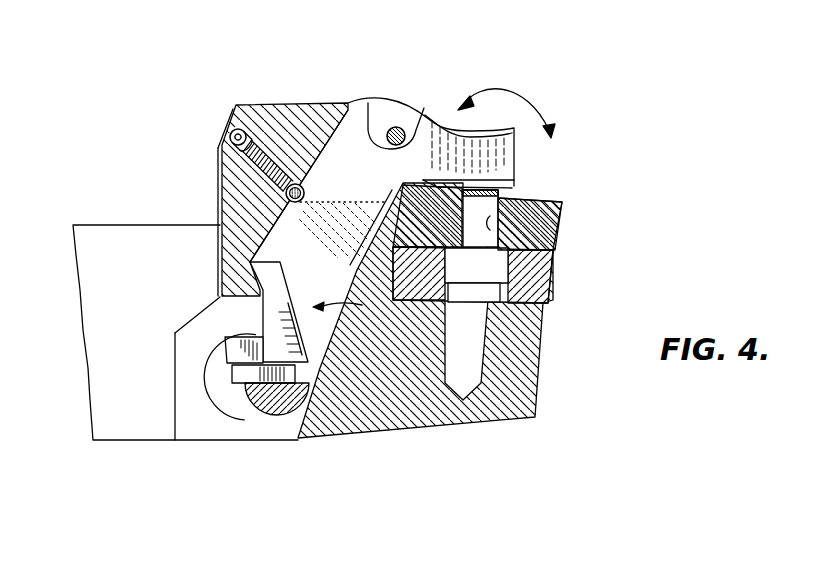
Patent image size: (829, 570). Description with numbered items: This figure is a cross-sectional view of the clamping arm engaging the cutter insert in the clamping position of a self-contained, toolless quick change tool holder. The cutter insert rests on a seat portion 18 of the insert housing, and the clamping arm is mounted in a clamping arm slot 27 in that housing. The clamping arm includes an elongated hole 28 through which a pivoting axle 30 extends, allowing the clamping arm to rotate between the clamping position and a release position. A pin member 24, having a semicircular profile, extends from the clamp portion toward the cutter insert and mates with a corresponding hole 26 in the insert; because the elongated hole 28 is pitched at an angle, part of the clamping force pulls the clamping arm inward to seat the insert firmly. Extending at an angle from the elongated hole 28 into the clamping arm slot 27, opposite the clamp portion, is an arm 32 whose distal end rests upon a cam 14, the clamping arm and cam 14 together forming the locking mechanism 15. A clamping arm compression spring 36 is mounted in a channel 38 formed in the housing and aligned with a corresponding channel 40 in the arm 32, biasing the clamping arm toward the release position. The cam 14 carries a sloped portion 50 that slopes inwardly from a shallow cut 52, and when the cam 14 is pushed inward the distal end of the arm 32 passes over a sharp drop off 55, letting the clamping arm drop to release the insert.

The cam 14 is at (202, 440).
The locking mechanism 15 is at (360, 438).
The seat portion 18 is at (557, 272).
The pin member 24 is at (518, 182).
The hole 26 is at (563, 215).
The clamping arm slot 27 is at (380, 148).
The elongated hole 28 is at (424, 186).
The pivoting axle 30 is at (395, 127).
The arm 32 is at (275, 318).
The clamping arm compression spring 36 is at (253, 192).
The channel 38 is at (267, 136).
The channel 40 is at (223, 293).
The sloped portion 50 is at (213, 382).
The shallow cut 52 is at (225, 336).
The sharp drop off 55 is at (247, 375).